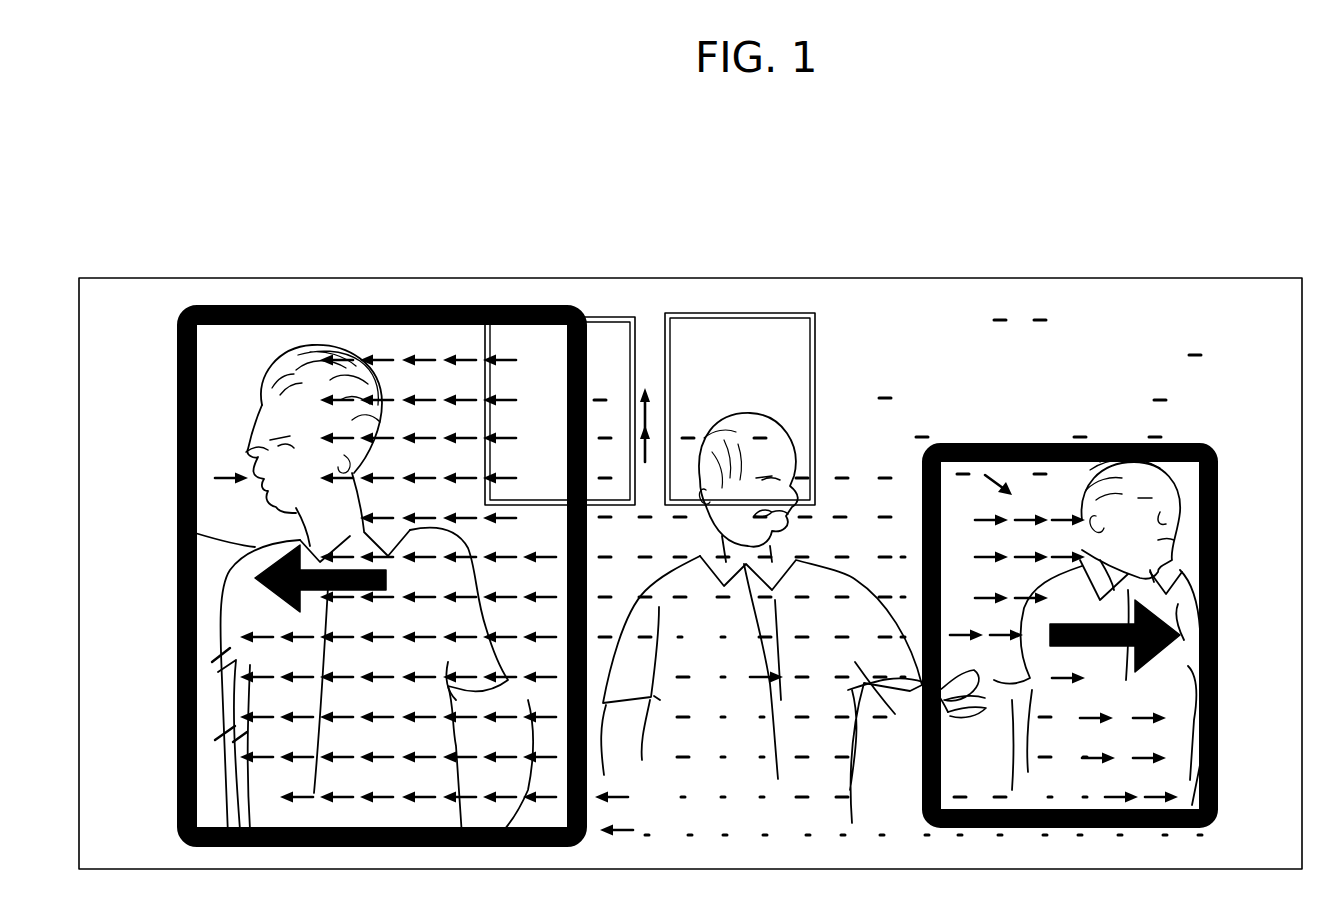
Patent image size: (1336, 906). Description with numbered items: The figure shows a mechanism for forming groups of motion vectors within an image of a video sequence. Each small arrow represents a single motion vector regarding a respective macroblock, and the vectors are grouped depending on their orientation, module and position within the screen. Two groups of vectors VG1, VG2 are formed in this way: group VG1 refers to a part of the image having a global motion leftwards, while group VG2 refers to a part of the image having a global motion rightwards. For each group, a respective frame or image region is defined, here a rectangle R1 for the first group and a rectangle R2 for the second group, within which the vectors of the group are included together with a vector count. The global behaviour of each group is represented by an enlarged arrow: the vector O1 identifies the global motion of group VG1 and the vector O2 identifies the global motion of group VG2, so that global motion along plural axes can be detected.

The rectangle R1 is at (221, 401).
The group of vectors VG1 is at (452, 311).
The vector O1 is at (295, 572).
The rectangle R2 is at (1180, 545).
The group of vectors VG2 is at (1015, 452).
The vector O2 is at (1164, 604).